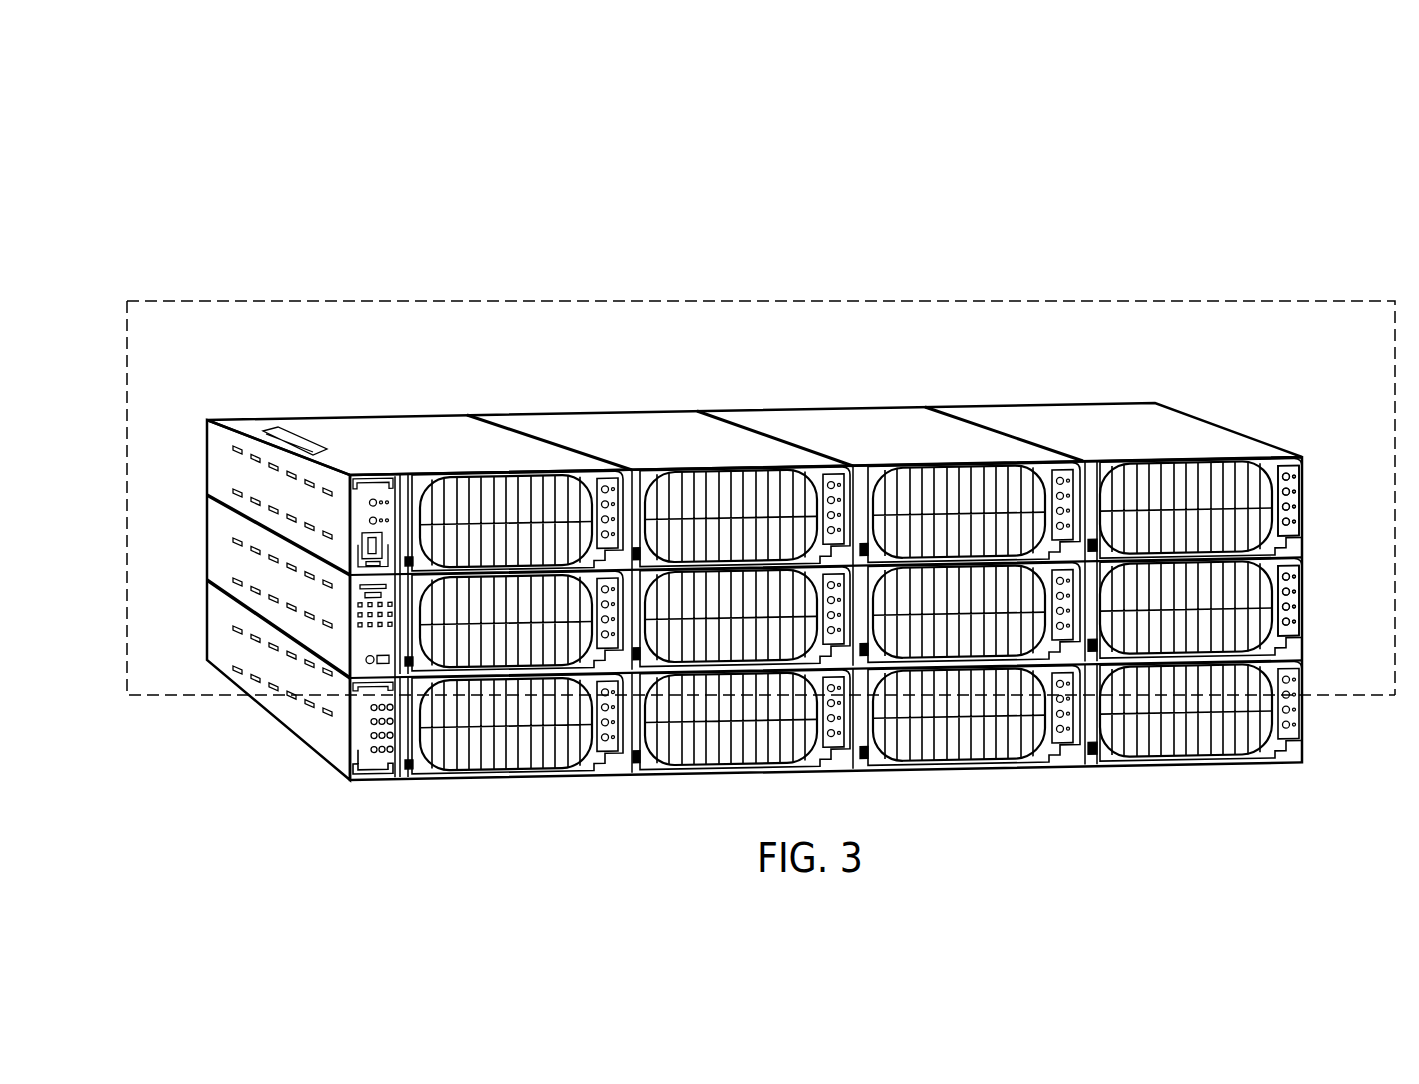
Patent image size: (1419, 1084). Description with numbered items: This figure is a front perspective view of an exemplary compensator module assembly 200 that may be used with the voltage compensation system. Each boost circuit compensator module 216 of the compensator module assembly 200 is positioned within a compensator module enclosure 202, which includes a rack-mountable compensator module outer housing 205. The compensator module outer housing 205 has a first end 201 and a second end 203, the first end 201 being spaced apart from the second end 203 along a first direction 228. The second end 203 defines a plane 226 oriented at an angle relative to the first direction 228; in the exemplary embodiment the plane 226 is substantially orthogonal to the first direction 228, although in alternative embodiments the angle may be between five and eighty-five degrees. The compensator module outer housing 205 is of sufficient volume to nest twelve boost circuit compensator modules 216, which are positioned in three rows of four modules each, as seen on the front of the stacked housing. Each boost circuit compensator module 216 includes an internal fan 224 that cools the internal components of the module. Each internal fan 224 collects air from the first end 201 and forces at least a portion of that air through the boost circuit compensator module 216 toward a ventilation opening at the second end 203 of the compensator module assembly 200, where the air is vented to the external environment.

The compensator module assembly 200 is at (1203, 175).
The first end 201 is at (1042, 763).
The compensator module enclosure 202 is at (266, 430).
The second end 203 is at (504, 406).
The compensator module outer housing 205 is at (1025, 430).
The boost circuit compensator module 216 is at (1310, 548).
The internal fan 224 is at (933, 498).
The plane 226 is at (901, 299).
The first direction 228 is at (127, 696).